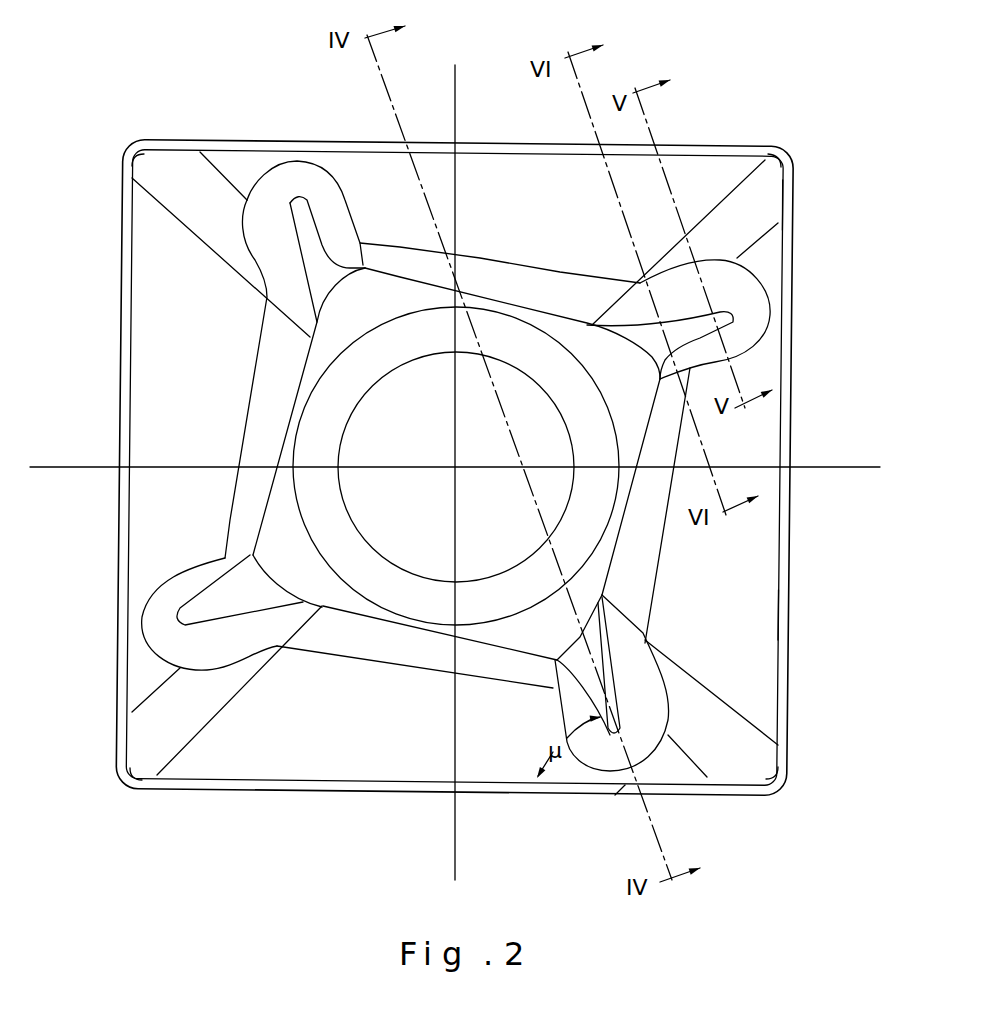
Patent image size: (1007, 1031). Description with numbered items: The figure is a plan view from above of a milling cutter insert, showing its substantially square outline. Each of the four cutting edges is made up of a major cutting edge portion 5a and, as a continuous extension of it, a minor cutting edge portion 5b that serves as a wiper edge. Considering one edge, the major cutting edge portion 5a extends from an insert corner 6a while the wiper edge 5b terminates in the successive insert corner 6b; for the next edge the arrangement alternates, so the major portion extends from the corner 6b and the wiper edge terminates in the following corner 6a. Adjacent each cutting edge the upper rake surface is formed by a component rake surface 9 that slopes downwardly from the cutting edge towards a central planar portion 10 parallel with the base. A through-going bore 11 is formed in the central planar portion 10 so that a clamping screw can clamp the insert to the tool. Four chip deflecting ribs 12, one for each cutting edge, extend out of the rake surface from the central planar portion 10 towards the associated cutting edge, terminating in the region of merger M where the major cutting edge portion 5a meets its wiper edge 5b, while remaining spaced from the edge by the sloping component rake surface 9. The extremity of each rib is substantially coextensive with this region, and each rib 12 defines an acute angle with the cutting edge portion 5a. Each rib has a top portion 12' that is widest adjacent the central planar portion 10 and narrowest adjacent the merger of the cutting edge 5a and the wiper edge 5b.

The major cutting edge portion 5a is at (788, 613).
The minor cutting edge portion 5b is at (792, 198).
The insert corner 6a is at (766, 140).
The insert corner 6b is at (133, 140).
The component rake surface 9 is at (705, 573).
The central planar portion 10 is at (537, 638).
The through-going bore 11 is at (547, 450).
The chip deflecting rib 12 is at (701, 683).
The top portion 12' is at (721, 319).
The region of merger M is at (620, 787).